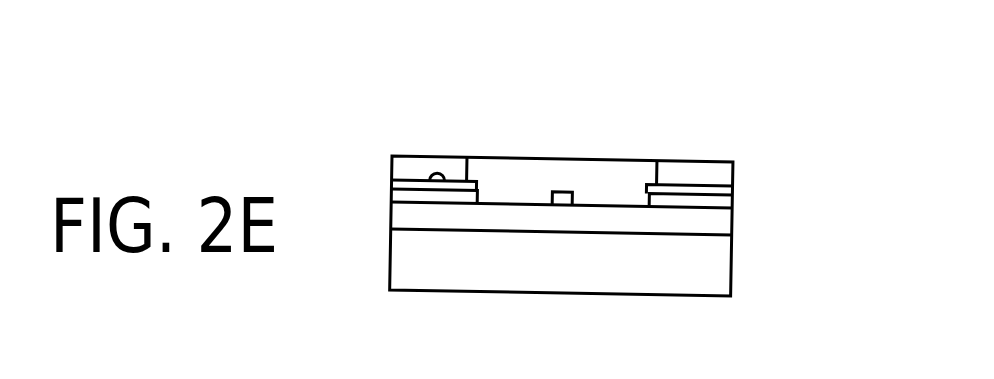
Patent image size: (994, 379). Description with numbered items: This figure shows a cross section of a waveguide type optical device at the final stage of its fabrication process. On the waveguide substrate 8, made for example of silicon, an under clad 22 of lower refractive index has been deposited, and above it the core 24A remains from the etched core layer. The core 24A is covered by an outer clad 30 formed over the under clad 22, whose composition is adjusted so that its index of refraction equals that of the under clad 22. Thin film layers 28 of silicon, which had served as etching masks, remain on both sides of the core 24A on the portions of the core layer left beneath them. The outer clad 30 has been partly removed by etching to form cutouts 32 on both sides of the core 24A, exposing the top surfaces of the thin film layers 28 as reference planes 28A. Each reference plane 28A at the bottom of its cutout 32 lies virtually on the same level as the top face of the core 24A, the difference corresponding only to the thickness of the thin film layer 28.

The waveguide substrate 8 is at (723, 263).
The under clad 22 is at (723, 223).
The core 24A is at (560, 188).
The thin film layer 28 is at (410, 168).
The reference plane 28A is at (445, 181).
The outer clad 30 is at (605, 172).
The cutout 32 is at (453, 167).